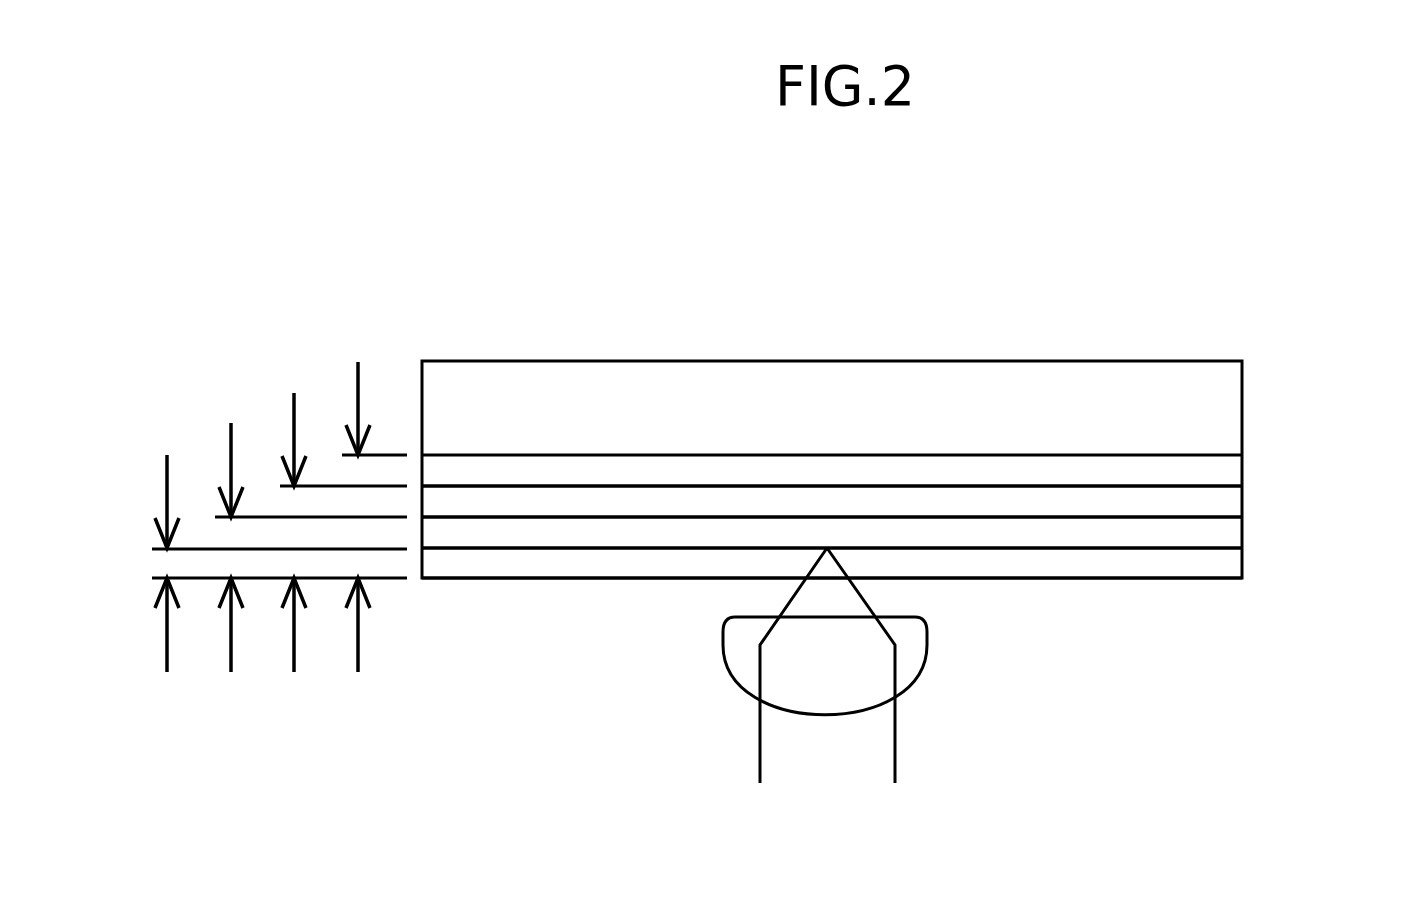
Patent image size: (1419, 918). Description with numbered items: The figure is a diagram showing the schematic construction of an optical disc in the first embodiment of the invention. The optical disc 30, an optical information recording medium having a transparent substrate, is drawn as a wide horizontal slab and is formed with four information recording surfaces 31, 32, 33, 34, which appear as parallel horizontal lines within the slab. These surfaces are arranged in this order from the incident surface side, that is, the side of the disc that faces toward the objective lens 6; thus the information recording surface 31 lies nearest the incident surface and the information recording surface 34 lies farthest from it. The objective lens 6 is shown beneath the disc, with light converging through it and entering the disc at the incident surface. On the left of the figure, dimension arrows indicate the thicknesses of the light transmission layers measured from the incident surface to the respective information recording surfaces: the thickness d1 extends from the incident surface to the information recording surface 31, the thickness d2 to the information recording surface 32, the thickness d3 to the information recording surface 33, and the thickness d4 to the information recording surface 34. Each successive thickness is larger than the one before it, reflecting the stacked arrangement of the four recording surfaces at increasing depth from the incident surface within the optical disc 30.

The optical disc 30 is at (1243, 390).
The information recording surface 31 is at (1243, 548).
The information recording surface 32 is at (1243, 517).
The information recording surface 33 is at (1243, 486).
The information recording surface 34 is at (1243, 453).
The objective lens 6 is at (733, 677).
The light transmission layer thickness d1 is at (274, 589).
The light transmission layer thickness d2 is at (307, 573).
The light transmission layer thickness d3 is at (339, 558).
The light transmission layer thickness d4 is at (368, 542).